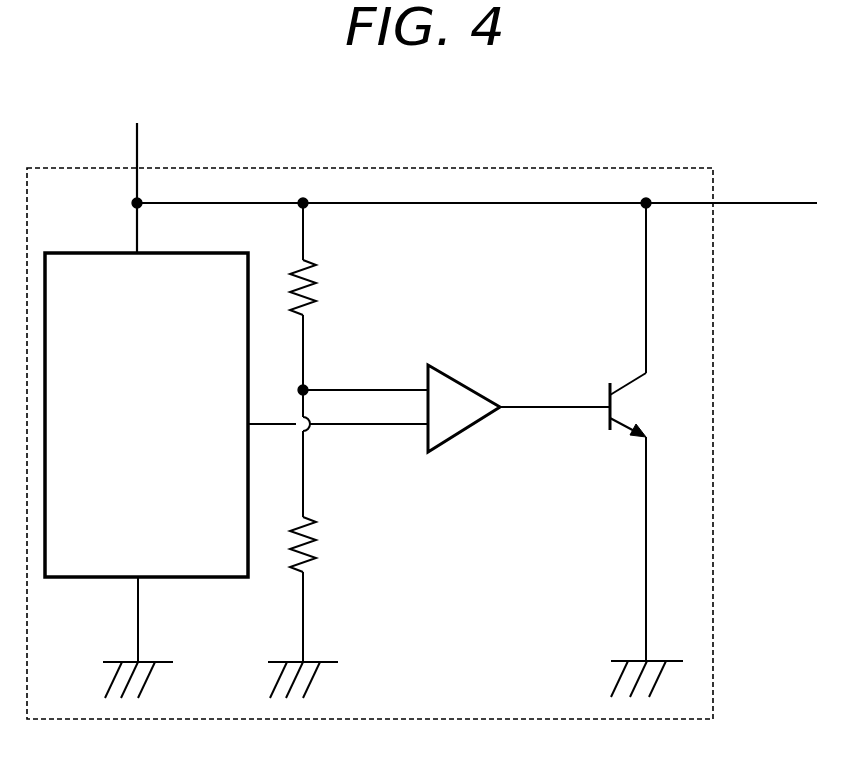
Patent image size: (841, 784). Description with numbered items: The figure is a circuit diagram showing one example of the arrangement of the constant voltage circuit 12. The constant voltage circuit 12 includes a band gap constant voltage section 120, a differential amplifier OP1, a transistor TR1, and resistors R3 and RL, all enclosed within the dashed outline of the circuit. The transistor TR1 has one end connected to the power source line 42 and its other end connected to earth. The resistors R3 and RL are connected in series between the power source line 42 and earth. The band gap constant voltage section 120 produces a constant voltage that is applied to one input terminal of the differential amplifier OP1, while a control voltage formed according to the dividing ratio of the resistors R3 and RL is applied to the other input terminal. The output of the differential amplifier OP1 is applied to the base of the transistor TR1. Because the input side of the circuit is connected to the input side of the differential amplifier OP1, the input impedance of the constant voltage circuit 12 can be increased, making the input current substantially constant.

The constant voltage circuit 12 is at (590, 167).
The power source line 42 is at (138, 135).
The band gap constant voltage section 120 is at (87, 253).
The resistor R3 is at (321, 294).
The resistor RL is at (310, 544).
The differential amplifier OP1 is at (429, 393).
The transistor TR1 is at (617, 447).